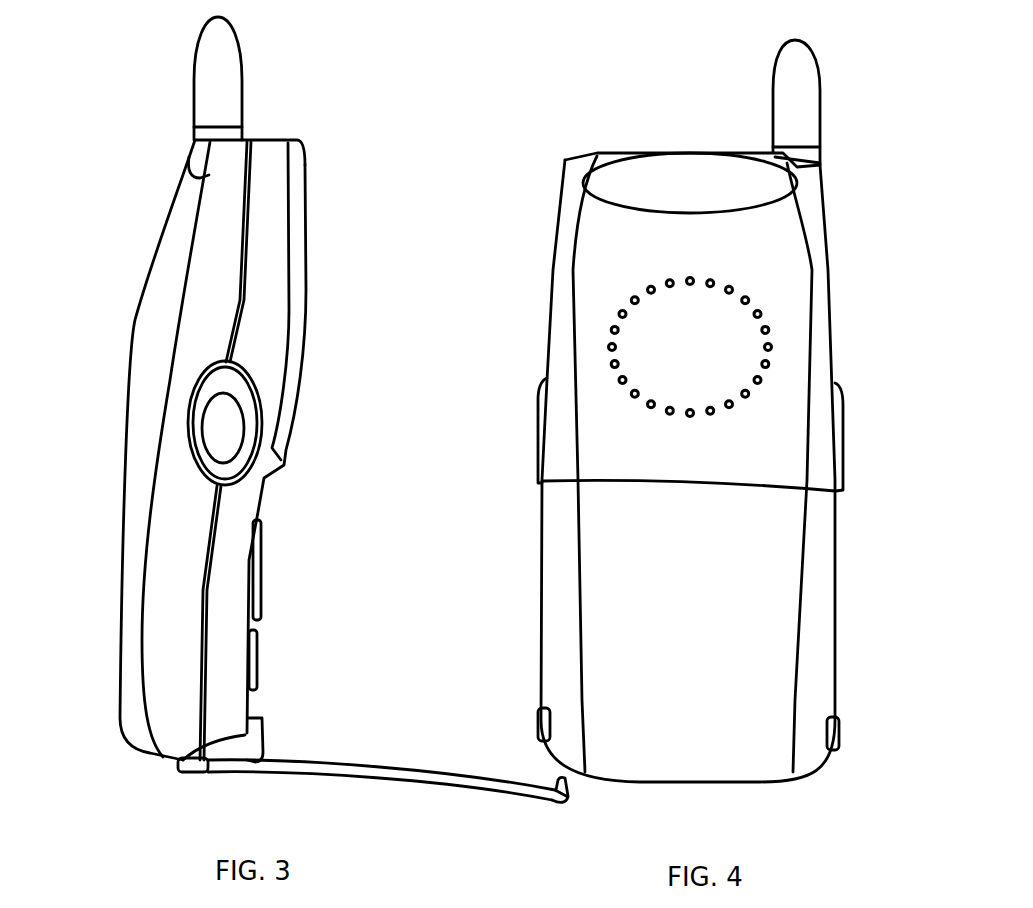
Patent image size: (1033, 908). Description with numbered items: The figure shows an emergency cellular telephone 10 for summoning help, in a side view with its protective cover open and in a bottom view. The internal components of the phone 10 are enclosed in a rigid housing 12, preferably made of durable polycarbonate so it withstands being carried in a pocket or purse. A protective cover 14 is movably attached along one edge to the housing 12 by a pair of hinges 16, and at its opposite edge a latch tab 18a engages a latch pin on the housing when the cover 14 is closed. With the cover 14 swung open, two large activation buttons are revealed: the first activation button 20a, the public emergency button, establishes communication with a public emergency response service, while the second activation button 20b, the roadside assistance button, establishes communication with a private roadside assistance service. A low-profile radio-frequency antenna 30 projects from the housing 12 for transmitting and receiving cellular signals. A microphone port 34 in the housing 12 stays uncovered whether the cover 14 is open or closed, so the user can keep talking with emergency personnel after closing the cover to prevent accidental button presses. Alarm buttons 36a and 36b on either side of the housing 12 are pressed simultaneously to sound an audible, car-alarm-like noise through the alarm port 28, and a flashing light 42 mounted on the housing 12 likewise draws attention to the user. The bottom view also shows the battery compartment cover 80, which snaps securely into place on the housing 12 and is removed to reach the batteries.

In FIG. 3, the emergency cellular telephone 10 is at (78, 226).
In FIG. 4, the emergency cellular telephone 10 is at (505, 201).
In FIG. 3, the rigid housing 12 is at (133, 322).
In FIG. 4, the rigid housing 12 is at (553, 277).
In FIG. 3, the protective cover 14 is at (448, 779).
In FIG. 3, the hinges 16 is at (199, 768).
In FIG. 4, the hinges 16 is at (536, 722).
In FIG. 3, the latch tab 18a is at (570, 792).
In FIG. 3, the first activation button 20a is at (262, 578).
In FIG. 3, the second activation button 20b is at (257, 651).
In FIG. 4, the alarm port 28 is at (763, 315).
In FIG. 3, the radio-frequency antenna 30 is at (233, 50).
In FIG. 4, the radio-frequency antenna 30 is at (812, 75).
In FIG. 3, the microphone port 34 is at (265, 733).
In FIG. 3, the alarm button 36a is at (212, 422).
In FIG. 4, the alarm button 36a is at (845, 432).
In FIG. 4, the alarm button 36b is at (538, 420).
In FIG. 3, the flashing light 42 is at (190, 163).
In FIG. 4, the flashing light 42 is at (784, 190).
In FIG. 4, the battery compartment cover 80 is at (828, 593).